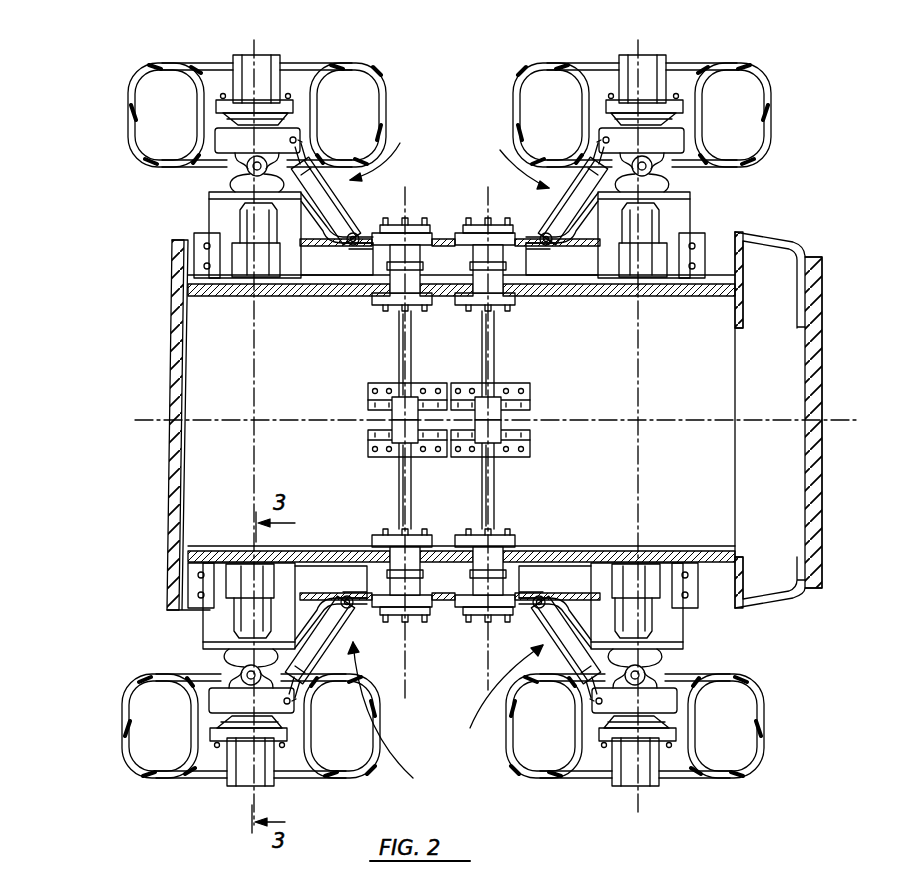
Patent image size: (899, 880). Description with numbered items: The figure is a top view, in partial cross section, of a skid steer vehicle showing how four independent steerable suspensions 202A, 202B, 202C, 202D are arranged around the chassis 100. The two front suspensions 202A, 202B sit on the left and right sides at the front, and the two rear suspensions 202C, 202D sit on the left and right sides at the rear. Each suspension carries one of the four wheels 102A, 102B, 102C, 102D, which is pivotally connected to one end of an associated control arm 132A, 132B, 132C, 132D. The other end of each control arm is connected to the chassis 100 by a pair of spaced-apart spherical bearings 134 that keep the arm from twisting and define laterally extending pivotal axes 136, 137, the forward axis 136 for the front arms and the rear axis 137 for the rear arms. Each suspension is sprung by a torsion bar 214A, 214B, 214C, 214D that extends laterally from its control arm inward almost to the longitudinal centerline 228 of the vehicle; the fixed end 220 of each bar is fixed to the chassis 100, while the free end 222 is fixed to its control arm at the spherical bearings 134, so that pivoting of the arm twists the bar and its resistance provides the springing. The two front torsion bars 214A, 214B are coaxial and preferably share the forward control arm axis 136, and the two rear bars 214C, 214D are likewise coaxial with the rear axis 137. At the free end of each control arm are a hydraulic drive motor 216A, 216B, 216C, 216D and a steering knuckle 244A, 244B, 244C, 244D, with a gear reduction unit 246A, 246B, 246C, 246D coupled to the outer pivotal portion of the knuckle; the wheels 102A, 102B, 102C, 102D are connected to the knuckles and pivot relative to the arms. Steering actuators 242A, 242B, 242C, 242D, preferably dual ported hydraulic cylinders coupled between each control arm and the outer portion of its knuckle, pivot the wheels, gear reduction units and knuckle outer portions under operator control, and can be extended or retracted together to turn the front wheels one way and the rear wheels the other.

The chassis 100 is at (708, 396).
The front wheel 102A is at (124, 706).
The front wheel 102B is at (382, 72).
The rear wheel 102C is at (768, 722).
The rear wheel 102D is at (765, 80).
The control arm 132A is at (205, 627).
The control arm 132B is at (205, 214).
The control arm 132C is at (685, 627).
The control arm 132D is at (690, 215).
The spherical bearings 134 is at (477, 224).
The pivotal axis 136 is at (405, 672).
The pivotal axis 137 is at (483, 664).
The independent suspension 202A is at (408, 715).
The independent suspension 202B is at (398, 142).
The independent suspension 202C is at (487, 703).
The independent suspension 202D is at (500, 150).
The torsion bar 214A is at (399, 480).
The torsion bar 214B is at (398, 365).
The torsion bar 214C is at (497, 475).
The torsion bar 214D is at (496, 358).
The hydraulic drive motor 216A is at (240, 580).
The hydraulic drive motor 216B is at (270, 265).
The hydraulic drive motor 216C is at (648, 580).
The hydraulic drive motor 216D is at (650, 267).
The fixed end 220 is at (482, 397).
The free end 222 is at (466, 300).
The longitudinal centerline 228 is at (152, 420).
The steering actuator 242A is at (340, 595).
The steering actuator 242B is at (362, 226).
The steering actuator 242C is at (578, 598).
The steering actuator 242D is at (560, 205).
The steering knuckle 244A is at (230, 665).
The steering knuckle 244B is at (232, 178).
The steering knuckle 244C is at (668, 663).
The steering knuckle 244D is at (690, 178).
The gear reduction unit 246A is at (243, 782).
The gear reduction unit 246B is at (270, 62).
The gear reduction unit 246C is at (660, 782).
The gear reduction unit 246D is at (665, 55).